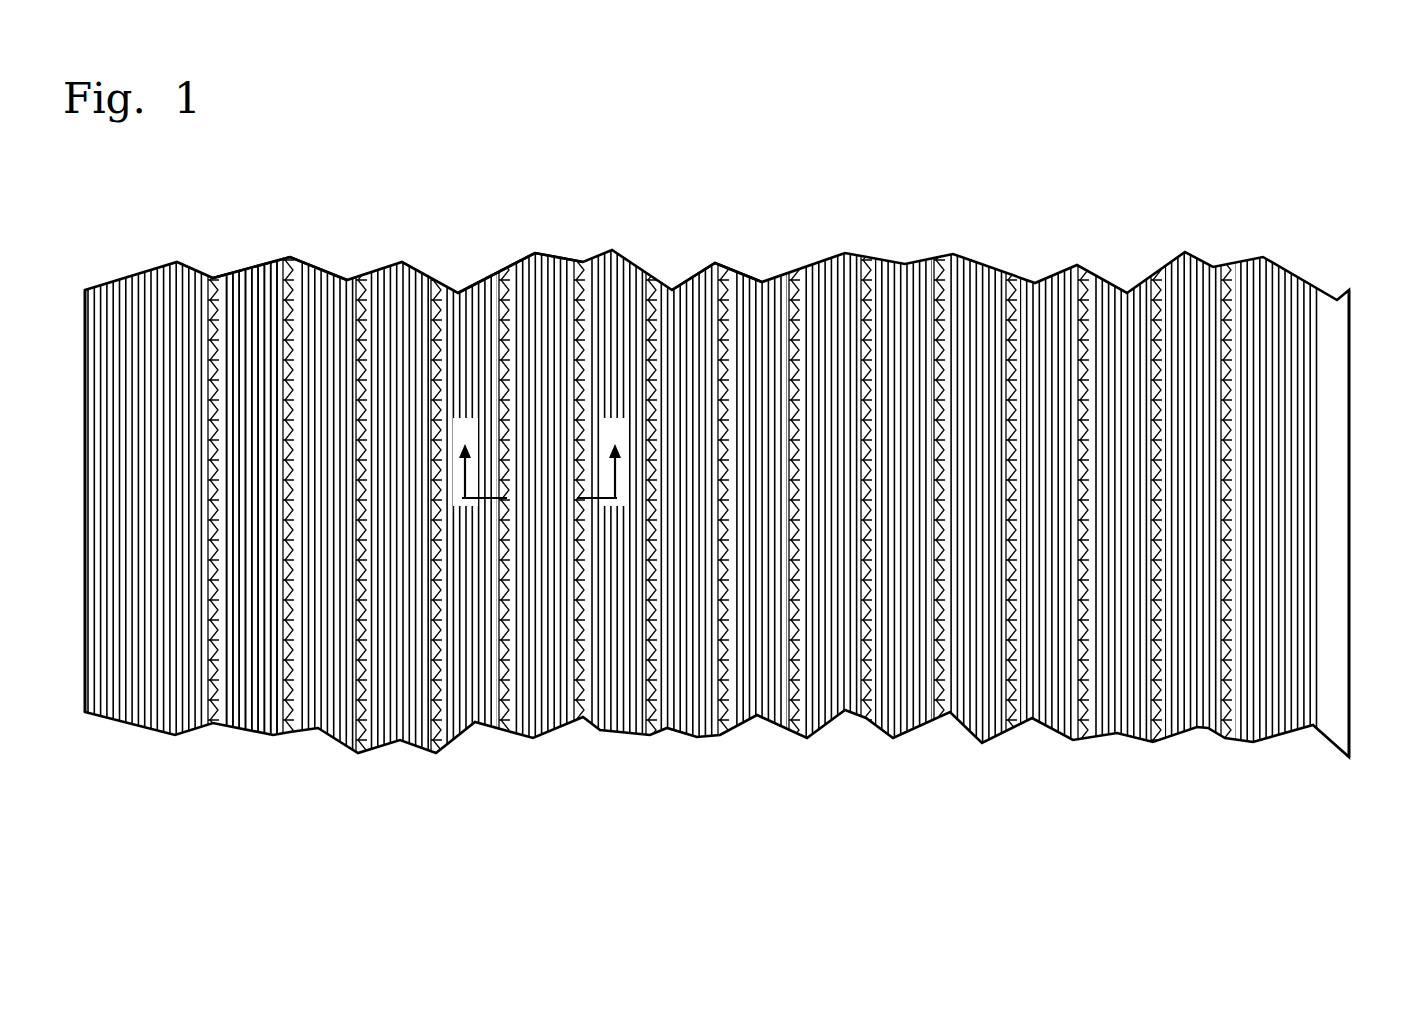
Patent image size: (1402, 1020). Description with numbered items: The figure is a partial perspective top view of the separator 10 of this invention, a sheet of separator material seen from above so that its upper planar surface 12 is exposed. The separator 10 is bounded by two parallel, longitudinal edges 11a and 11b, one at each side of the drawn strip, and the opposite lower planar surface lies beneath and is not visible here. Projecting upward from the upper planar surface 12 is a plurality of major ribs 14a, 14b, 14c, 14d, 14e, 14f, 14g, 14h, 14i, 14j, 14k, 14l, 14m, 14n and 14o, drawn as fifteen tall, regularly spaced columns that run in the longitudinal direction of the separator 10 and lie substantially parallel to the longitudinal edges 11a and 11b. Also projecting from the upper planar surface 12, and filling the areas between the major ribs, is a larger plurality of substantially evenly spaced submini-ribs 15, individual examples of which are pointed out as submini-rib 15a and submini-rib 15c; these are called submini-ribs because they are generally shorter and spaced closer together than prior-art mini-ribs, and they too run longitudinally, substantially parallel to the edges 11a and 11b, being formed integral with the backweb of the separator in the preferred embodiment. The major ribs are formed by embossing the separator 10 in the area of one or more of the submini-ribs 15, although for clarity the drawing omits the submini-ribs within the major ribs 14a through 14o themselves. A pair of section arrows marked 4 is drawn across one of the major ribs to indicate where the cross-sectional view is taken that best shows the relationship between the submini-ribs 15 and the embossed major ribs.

The separator 10 is at (162, 210).
The longitudinal edge 11a is at (85, 317).
The longitudinal edge 11b is at (1350, 706).
The upper planar surface 12 is at (252, 703).
The major rib 14a is at (215, 716).
The major rib 14b is at (288, 722).
The major rib 14c is at (357, 726).
The major rib 14d is at (430, 726).
The major rib 14e is at (498, 708).
The major rib 14f is at (572, 710).
The major rib 14g is at (645, 712).
The major rib 14h is at (716, 712).
The major rib 14i is at (788, 712).
The major rib 14j is at (861, 715).
The major rib 14k is at (933, 712).
The major rib 14l is at (1005, 712).
The major rib 14m is at (1078, 712).
The major rib 14n is at (1150, 712).
The major rib 14o is at (1220, 712).
The submini-rib 15 is at (305, 263).
The submini-rib 15a is at (555, 259).
The submini-rib 15c is at (744, 278).
The section line 4- 4 is at (540, 462).